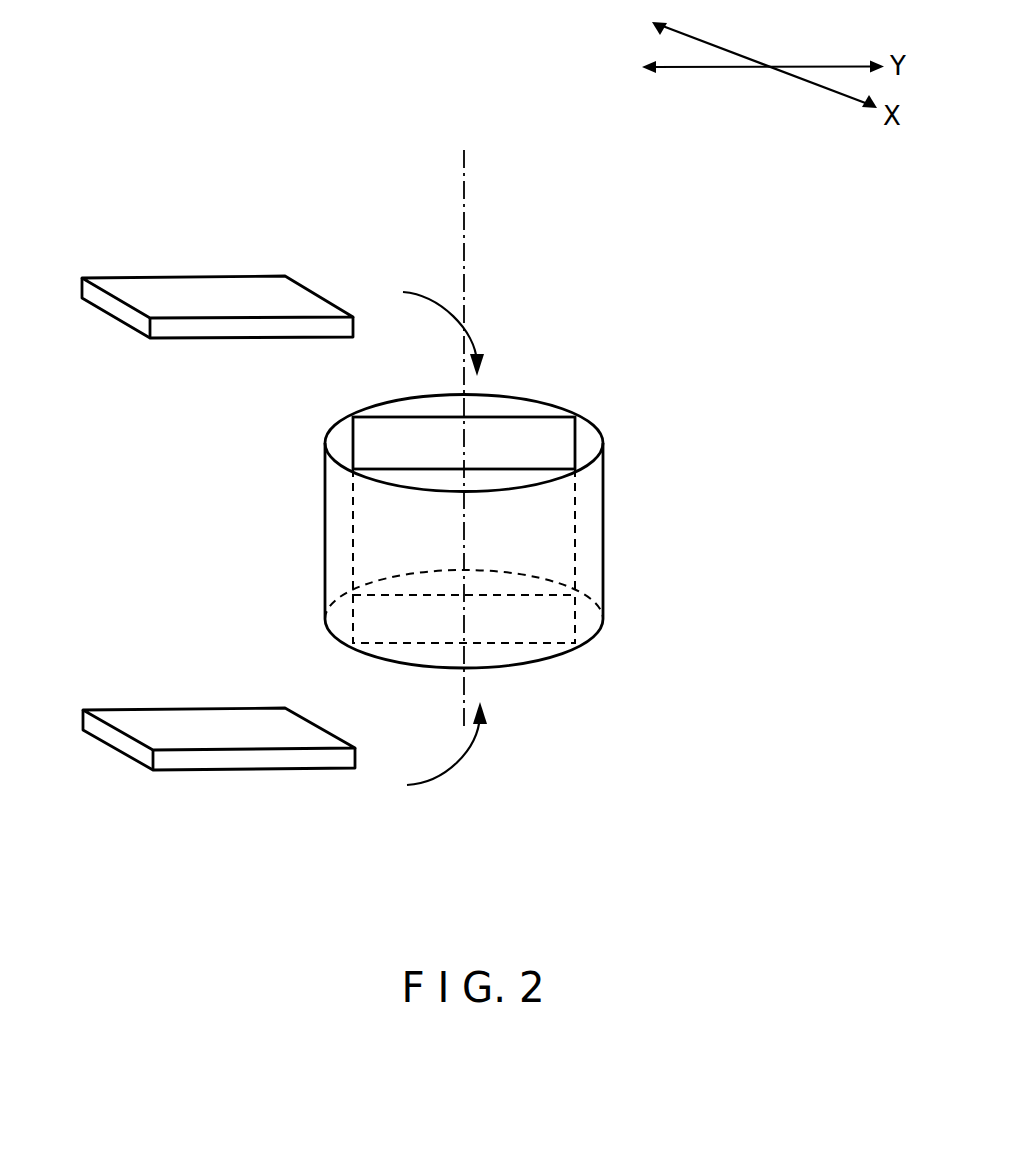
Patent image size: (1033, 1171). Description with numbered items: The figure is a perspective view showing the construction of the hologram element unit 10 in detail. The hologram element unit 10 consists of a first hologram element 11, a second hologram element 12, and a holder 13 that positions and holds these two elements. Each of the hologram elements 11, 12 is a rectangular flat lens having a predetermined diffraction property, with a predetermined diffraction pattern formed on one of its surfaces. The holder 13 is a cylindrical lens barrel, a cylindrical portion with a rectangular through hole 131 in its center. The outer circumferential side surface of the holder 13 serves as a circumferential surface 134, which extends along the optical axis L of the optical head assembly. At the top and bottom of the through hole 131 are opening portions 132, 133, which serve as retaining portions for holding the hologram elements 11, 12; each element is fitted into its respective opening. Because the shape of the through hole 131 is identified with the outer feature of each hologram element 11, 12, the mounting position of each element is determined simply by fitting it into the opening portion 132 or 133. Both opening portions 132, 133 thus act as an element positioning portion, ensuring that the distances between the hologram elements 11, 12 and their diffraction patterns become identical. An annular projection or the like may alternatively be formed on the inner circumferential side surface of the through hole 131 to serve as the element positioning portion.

The hologram element unit 10 is at (652, 316).
The first hologram element 11 is at (142, 293).
The second hologram element 12 is at (140, 725).
The holder 13 is at (526, 530).
The through hole 131 is at (514, 427).
The opening portion 132 is at (575, 443).
The opening portion 133 is at (525, 646).
The circumferential surface 134 is at (602, 553).
The optical axis L is at (465, 203).